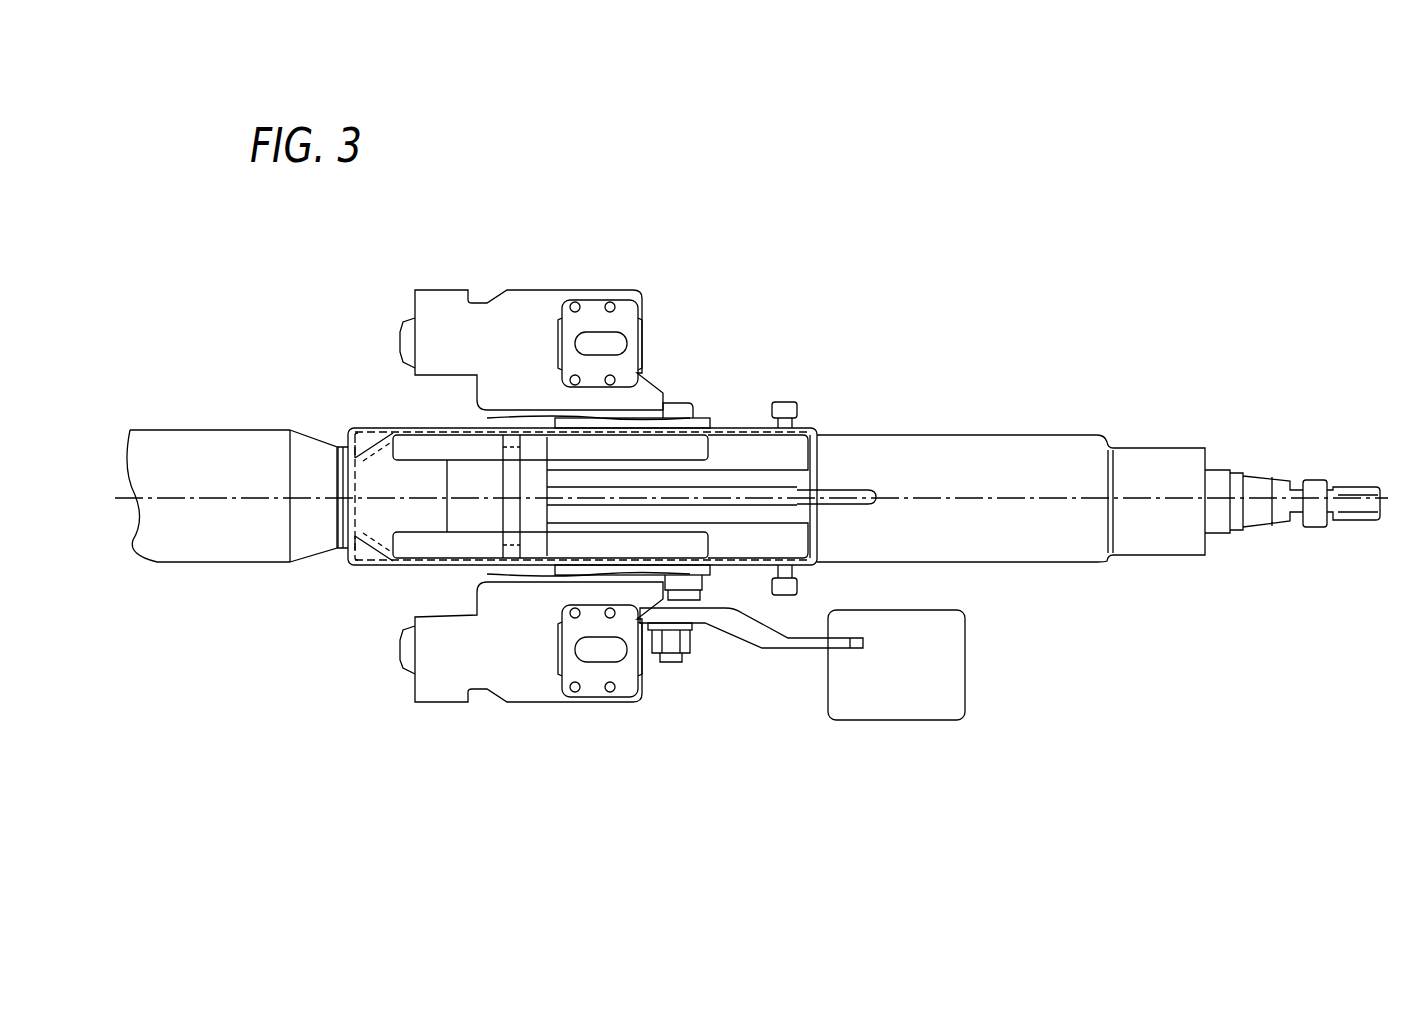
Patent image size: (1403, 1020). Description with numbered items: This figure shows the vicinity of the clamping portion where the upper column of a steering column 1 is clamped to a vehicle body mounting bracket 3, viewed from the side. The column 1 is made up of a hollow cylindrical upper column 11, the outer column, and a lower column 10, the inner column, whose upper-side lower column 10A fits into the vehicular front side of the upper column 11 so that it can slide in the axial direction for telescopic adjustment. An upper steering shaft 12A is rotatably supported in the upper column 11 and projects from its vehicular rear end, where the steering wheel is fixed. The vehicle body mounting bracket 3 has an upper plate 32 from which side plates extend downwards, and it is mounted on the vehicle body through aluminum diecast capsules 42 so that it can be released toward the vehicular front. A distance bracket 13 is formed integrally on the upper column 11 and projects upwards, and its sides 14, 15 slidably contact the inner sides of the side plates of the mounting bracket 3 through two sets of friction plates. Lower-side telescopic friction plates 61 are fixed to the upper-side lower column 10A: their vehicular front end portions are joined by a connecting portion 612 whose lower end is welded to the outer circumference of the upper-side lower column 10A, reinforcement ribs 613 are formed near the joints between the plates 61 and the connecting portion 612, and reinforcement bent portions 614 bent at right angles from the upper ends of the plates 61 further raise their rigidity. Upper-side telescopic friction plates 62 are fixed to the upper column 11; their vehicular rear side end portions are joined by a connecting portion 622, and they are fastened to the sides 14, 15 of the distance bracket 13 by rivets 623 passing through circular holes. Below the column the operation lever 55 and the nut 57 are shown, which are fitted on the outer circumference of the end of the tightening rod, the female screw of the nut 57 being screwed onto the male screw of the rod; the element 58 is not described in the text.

The column 1 is at (956, 410).
The vehicle body mounting bracket 3 is at (496, 266).
The lower column 10 is at (200, 415).
The upper-side lower column 10A is at (242, 448).
The upper column 11 is at (1036, 450).
The upper steering shaft 12A is at (1280, 487).
The distance bracket 13 is at (795, 542).
The side of distance bracket 14 is at (738, 565).
The side of distance bracket 15 is at (723, 430).
The upper plate 32 is at (533, 310).
The aluminum diecast capsule 42 is at (591, 306).
The operation lever 55 is at (885, 705).
The nut 57 is at (688, 642).
The bolt end 58 is at (665, 655).
The lower-side telescopic friction plate 61 is at (374, 428).
The upper-side telescopic friction plate 62 is at (745, 428).
The connecting portion 612 is at (350, 483).
The reinforcement rib 613 is at (364, 442).
The reinforcement bent portion 614 is at (444, 443).
The connecting portion 622 is at (820, 467).
The rivet 623 is at (797, 410).